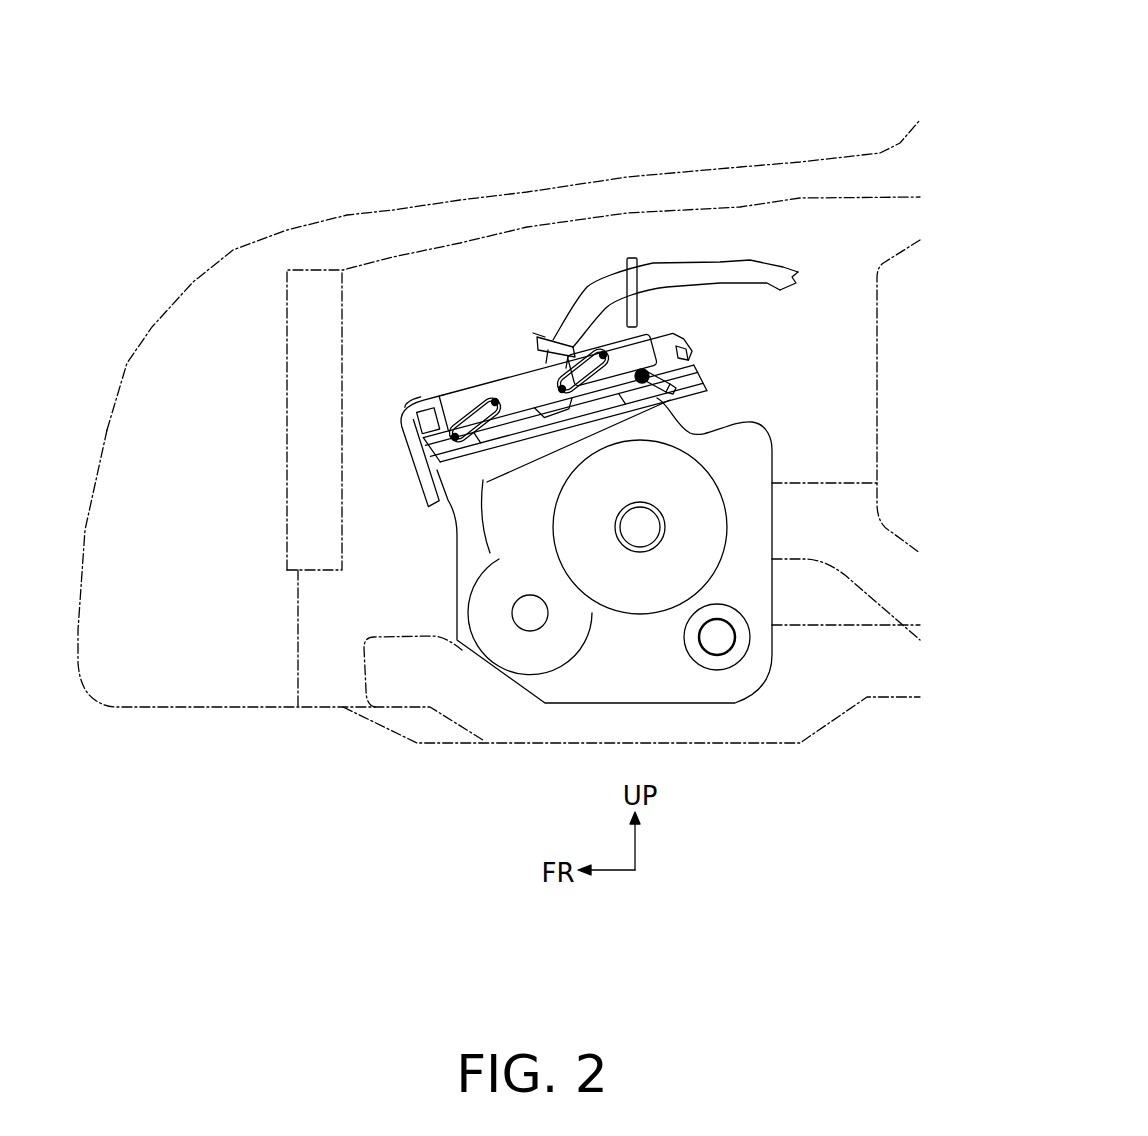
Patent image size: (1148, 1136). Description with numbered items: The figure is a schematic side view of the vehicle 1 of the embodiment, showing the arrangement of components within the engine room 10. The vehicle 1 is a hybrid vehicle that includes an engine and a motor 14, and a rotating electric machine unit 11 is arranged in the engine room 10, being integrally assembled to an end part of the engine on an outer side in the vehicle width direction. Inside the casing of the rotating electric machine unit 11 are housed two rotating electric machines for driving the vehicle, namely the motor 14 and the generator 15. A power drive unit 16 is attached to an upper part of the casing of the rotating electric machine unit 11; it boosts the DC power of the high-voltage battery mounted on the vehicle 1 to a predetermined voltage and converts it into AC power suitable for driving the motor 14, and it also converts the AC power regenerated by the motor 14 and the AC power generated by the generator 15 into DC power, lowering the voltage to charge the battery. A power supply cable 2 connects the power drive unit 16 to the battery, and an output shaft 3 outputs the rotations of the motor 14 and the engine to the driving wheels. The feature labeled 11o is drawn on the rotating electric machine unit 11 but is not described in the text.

The vehicle 1 is at (451, 117).
The power supply cable 2 is at (712, 262).
The output shaft 3 is at (728, 652).
The engine room 10 is at (401, 272).
The rotating electric machine unit 11 is at (770, 410).
The bolt 11o is at (668, 392).
The motor 14 is at (730, 557).
The generator 15 is at (495, 660).
The power drive unit 16 is at (460, 374).